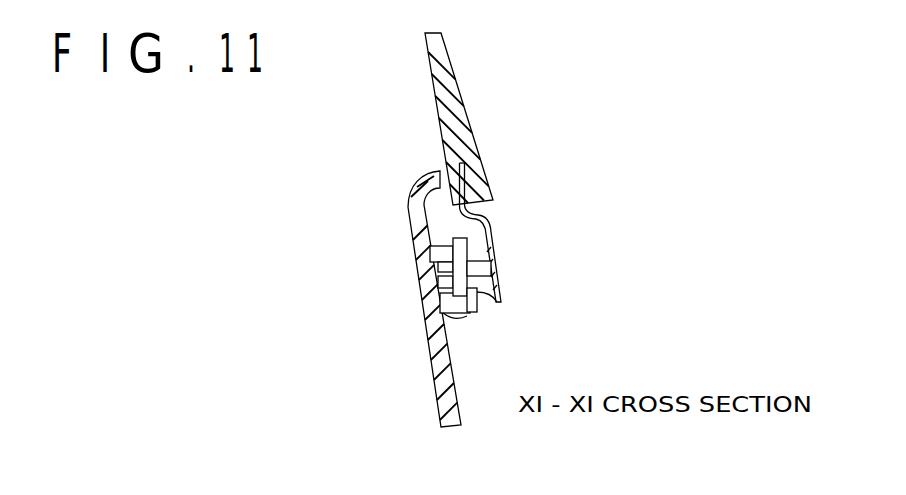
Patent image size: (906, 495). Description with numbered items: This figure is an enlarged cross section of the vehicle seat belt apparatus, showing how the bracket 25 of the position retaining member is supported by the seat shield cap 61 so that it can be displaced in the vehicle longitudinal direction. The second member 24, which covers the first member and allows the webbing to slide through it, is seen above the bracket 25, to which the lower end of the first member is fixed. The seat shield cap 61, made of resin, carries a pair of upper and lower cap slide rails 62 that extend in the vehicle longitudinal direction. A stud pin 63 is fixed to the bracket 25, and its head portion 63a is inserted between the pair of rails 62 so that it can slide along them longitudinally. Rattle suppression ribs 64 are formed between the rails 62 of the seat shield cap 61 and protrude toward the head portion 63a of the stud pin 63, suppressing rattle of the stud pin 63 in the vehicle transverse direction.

The second member 24 is at (460, 122).
The bracket 25 is at (492, 234).
The seat shield cap 61 is at (410, 204).
The cap slide rails 62 is at (432, 248).
The stud pin 63 is at (481, 275).
The head portion 63a is at (480, 303).
The rattle suppression ribs 64 is at (438, 268).